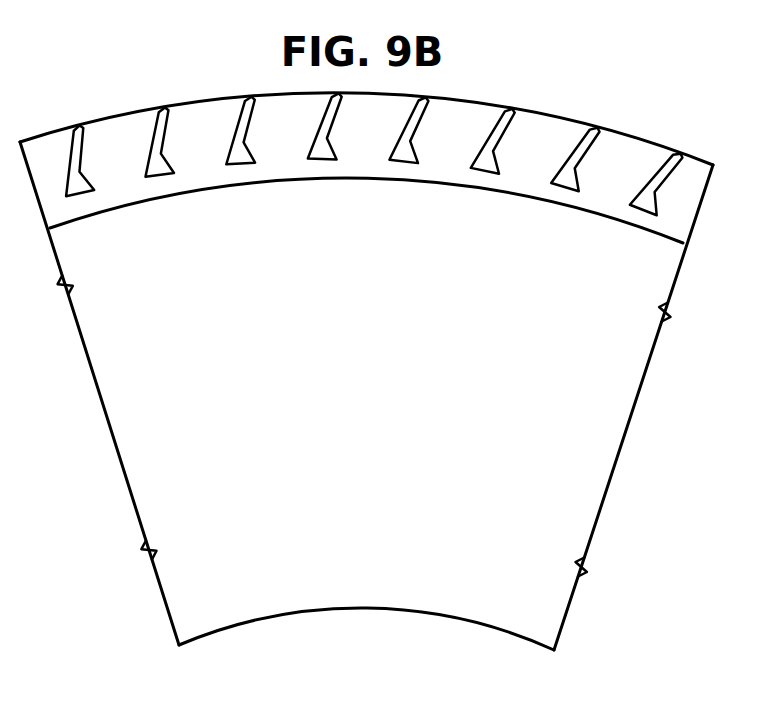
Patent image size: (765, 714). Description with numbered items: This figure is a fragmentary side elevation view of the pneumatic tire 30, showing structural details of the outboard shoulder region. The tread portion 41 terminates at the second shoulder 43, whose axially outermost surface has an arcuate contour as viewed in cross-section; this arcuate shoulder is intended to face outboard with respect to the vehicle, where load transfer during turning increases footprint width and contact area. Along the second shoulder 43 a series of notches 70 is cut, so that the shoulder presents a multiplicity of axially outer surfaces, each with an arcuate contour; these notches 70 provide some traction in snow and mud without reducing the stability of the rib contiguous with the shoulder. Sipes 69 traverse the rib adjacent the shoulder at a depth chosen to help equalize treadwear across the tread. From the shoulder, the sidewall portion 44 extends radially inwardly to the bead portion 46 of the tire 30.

The pneumatic tire 30 is at (567, 98).
The tread portion 41 is at (200, 102).
The second shoulder 43 is at (473, 115).
The sidewall portion 44 is at (600, 433).
The bead portion 46 is at (462, 609).
The sipes 69 is at (343, 97).
The notches 70 is at (240, 127).